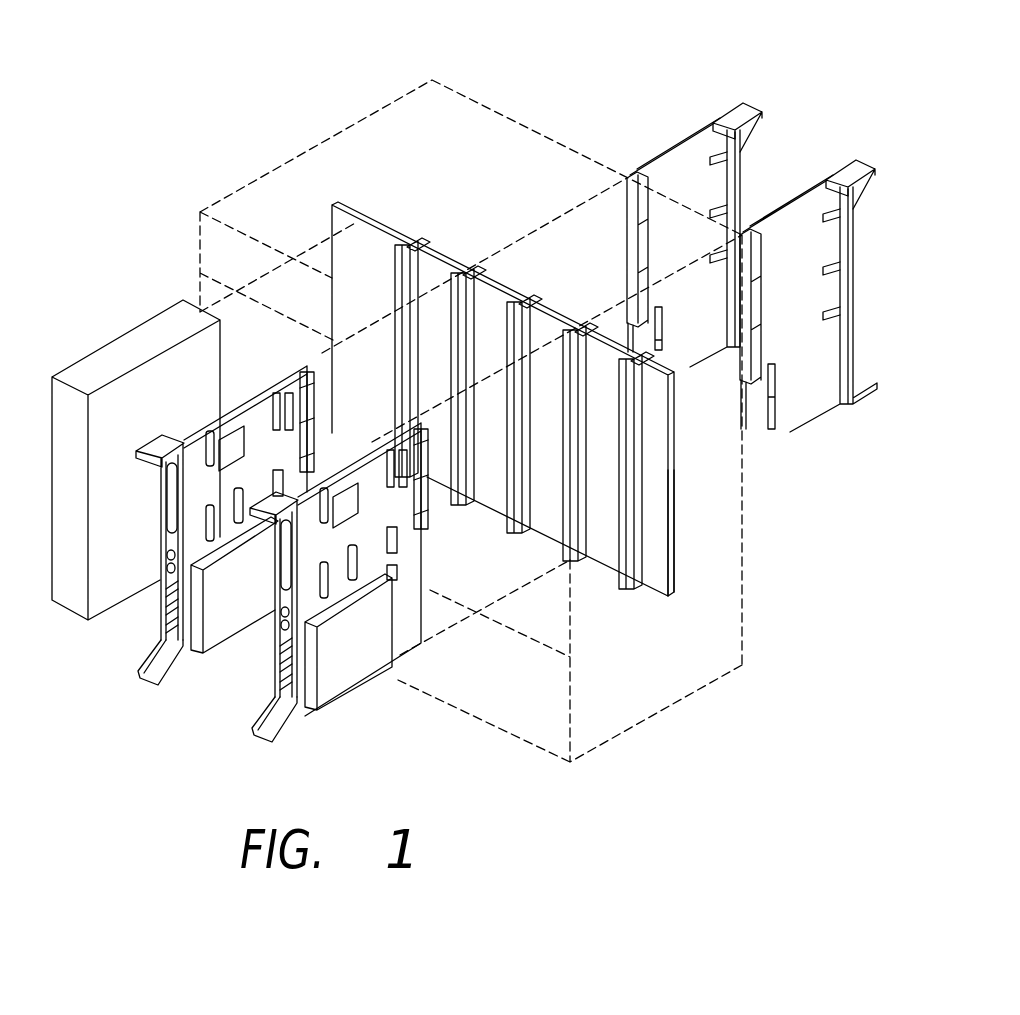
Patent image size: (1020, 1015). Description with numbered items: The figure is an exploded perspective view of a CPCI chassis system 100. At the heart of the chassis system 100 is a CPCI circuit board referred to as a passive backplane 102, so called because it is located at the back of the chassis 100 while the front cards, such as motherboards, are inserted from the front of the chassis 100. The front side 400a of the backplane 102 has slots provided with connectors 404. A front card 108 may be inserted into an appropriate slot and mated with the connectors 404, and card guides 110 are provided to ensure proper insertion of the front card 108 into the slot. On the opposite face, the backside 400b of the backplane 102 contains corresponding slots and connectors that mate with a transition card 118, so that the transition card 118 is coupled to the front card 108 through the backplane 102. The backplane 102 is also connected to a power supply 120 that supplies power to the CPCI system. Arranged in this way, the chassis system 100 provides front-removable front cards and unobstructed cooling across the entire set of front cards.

The chassis system 100 is at (662, 665).
The backplane 102 is at (388, 225).
The front card 108 is at (147, 677).
The card guides 110 is at (458, 620).
The transition card 118 is at (693, 133).
The power supply 120 is at (86, 378).
The connectors 404 is at (473, 268).
The front side 400a is at (652, 538).
The backside 400b is at (680, 512).